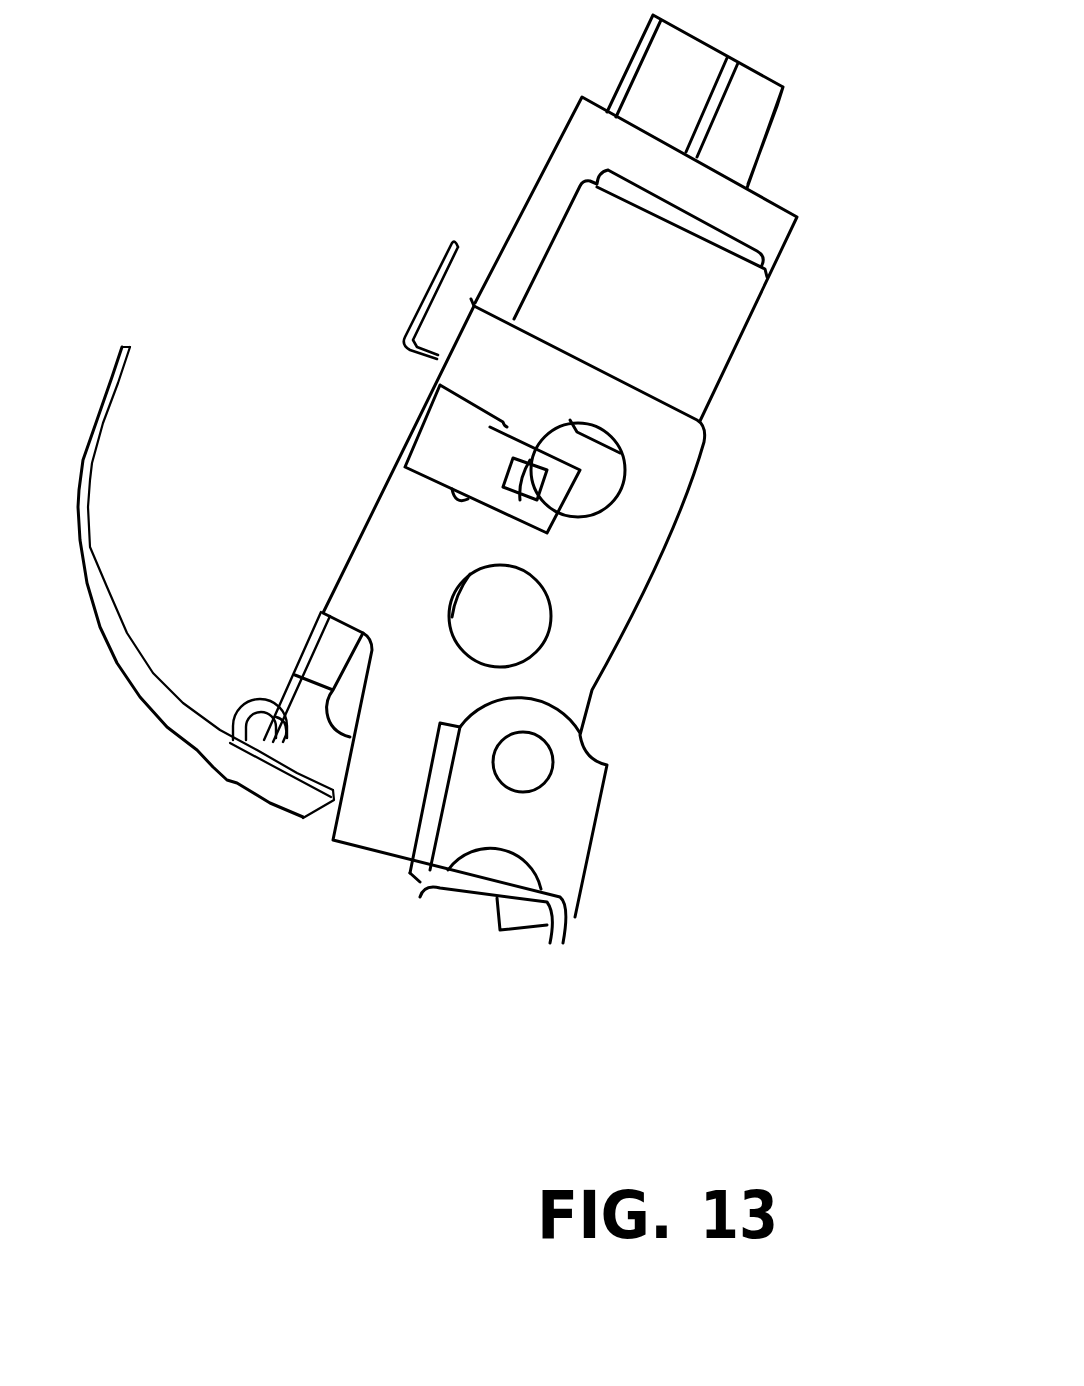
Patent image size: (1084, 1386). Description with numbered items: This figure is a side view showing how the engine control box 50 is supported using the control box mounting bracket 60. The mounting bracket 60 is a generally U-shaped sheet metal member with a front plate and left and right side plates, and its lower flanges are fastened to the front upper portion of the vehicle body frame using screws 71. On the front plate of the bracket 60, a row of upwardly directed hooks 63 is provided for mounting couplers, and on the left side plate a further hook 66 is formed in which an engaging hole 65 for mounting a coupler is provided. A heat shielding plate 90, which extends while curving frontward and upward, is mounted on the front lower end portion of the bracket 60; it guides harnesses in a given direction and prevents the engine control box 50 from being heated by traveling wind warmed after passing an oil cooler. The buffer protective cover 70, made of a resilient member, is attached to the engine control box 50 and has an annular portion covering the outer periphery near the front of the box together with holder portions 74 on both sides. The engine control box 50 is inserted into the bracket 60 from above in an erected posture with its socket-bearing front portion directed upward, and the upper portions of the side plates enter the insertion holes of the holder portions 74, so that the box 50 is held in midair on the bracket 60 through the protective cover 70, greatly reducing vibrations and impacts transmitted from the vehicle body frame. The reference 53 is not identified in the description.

The connector block 53 is at (775, 92).
The buffer protective cover 70 is at (783, 218).
The holder portion 74 is at (722, 352).
The control box mounting bracket 60 is at (766, 268).
The engaging hole 65 is at (547, 534).
The hook 66 is at (432, 423).
The hook 63 is at (438, 264).
The heat shielding plate 90 is at (93, 541).
The engine control box 50 is at (300, 668).
The screw 71 is at (533, 860).